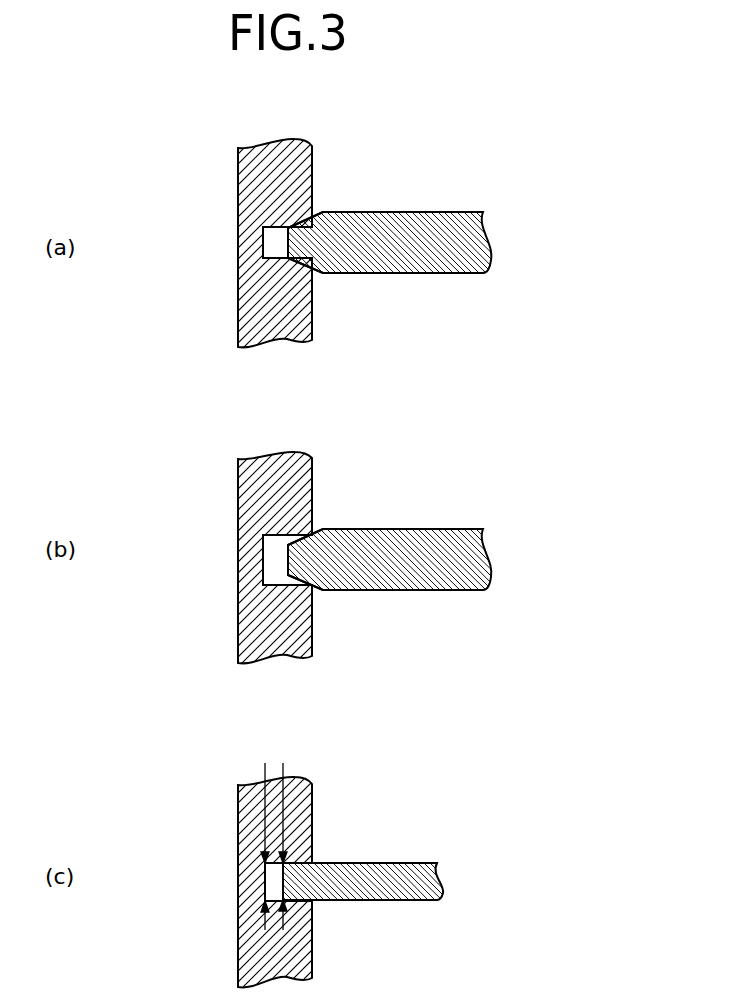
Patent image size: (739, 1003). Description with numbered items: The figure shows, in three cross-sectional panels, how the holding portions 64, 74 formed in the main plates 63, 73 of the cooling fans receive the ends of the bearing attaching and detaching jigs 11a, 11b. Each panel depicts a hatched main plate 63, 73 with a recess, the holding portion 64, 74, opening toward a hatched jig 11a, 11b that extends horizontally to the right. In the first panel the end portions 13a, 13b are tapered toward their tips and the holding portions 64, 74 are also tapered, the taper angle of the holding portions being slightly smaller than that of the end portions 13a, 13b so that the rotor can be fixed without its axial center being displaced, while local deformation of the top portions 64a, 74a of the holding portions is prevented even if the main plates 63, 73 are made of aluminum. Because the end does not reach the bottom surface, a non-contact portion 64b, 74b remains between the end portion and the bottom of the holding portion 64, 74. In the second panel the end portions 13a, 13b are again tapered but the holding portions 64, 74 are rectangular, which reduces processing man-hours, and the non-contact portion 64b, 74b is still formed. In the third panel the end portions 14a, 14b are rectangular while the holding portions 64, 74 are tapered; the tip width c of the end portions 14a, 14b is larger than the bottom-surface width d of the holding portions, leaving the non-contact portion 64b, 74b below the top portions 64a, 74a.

The main plate 63 is at (219, 536).
The main plate 73 is at (248, 187).
The holding portion 64 is at (227, 564).
The holding portion 74 is at (265, 238).
The top portion 64a is at (382, 600).
The top portion 74a is at (313, 274).
The non-contact portion 64b is at (206, 598).
The non-contact portion 74b is at (277, 249).
The plate member 11a is at (386, 523).
The plate member 11b is at (453, 212).
The end portion 13a is at (353, 367).
The end portion 13b is at (313, 214).
The end portion 14a is at (351, 846).
The end portion 14b is at (292, 863).
The width of tip portions c is at (284, 832).
The width of bottom surfaces d is at (264, 832).